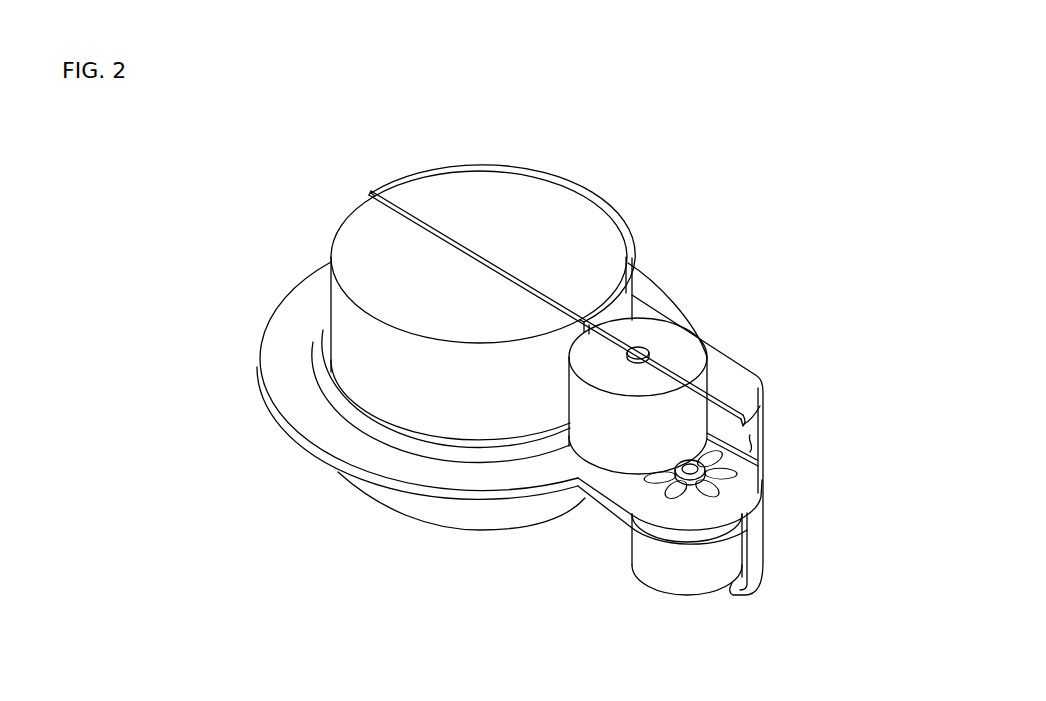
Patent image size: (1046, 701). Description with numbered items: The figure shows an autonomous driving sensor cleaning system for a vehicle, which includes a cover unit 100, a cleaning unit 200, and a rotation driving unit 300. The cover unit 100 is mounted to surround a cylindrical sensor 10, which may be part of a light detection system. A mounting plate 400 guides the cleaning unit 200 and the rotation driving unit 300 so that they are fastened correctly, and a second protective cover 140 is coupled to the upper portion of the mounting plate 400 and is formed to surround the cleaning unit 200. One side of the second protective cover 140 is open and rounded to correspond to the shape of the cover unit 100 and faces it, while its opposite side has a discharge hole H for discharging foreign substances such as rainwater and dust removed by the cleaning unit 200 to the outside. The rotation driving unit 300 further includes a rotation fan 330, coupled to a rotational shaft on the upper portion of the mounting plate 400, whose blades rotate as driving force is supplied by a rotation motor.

The sensor 10 is at (352, 231).
The cover unit 100 is at (587, 192).
The second protective cover 140 is at (733, 363).
The cleaning unit 200 is at (601, 446).
The rotation driving unit 300 is at (677, 580).
The rotation fan 330 is at (730, 492).
The mounting plate 400 is at (270, 359).
The discharge hole H is at (753, 444).